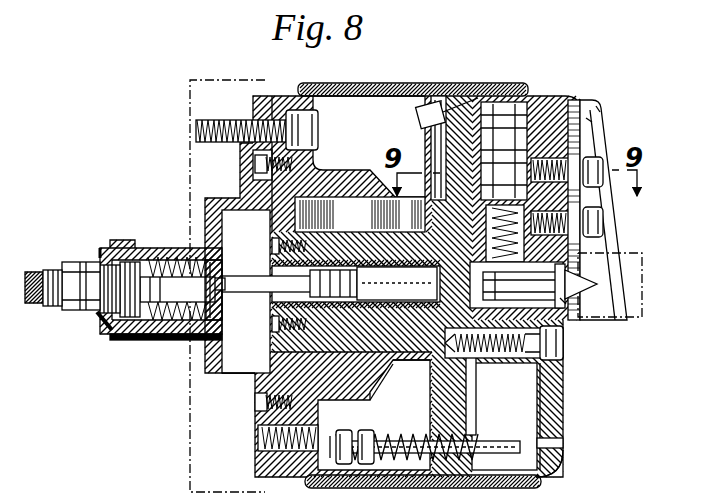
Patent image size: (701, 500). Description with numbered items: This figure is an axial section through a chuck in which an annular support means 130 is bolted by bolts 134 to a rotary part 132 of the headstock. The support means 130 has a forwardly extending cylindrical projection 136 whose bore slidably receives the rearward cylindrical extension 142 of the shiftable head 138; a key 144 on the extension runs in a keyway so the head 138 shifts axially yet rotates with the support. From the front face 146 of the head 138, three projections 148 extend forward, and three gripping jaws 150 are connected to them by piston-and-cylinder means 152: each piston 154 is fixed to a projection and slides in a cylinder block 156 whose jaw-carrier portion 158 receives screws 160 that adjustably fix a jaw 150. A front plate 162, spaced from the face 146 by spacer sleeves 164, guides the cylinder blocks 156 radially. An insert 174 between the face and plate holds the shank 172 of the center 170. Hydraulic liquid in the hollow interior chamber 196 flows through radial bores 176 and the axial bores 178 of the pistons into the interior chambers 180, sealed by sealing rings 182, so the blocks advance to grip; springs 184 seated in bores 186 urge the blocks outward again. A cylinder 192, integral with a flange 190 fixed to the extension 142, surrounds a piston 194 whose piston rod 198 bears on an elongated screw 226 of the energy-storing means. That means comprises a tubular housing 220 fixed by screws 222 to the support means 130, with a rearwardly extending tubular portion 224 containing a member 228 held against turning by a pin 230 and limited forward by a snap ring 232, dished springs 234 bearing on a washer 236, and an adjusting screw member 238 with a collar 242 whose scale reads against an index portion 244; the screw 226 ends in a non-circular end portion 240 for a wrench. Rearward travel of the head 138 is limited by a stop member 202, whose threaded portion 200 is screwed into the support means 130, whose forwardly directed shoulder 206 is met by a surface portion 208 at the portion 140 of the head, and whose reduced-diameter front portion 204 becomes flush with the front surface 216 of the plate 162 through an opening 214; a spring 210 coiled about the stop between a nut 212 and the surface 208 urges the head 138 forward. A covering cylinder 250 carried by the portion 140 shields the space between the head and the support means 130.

The annular support means 130 is at (252, 94).
The rotary part of the headstock 132 is at (190, 82).
The bolts 134 is at (193, 126).
The forwardly extending cylindrical projection 136 is at (330, 186).
The shiftable head 138 is at (478, 390).
The portion of the head 140 is at (430, 392).
The rearward cylindrical extension 142 is at (270, 354).
The key 144 is at (357, 213).
The front face of the head 146 is at (478, 374).
The forwardly extending projections 148 is at (507, 100).
The gripping jaws 150 is at (590, 118).
The piston-and-cylinder means 152 is at (541, 97).
The piston 154 is at (568, 150).
The cylinder blocks 156 is at (566, 226).
The jaw-carrier portion 158 is at (572, 118).
The screws 160 is at (576, 160).
The front plate 162 is at (563, 400).
The spacer sleeves 164 is at (565, 368).
The center 170 is at (598, 284).
The shank of the center 172 is at (566, 274).
The insert 174 is at (568, 296).
The radial bores 176 is at (437, 98).
The axial bores of the pistons 178 is at (598, 104).
The interior chambers of the cylinders 180 is at (603, 168).
The sealing rings 182 is at (419, 134).
The springs 184 is at (606, 242).
The bores in the blocks 186 is at (604, 214).
The flange 190 is at (272, 233).
The cylinder 192 is at (372, 396).
The piston 194 is at (290, 272).
The hollow interior chamber 196 is at (374, 415).
The piston rod 198 is at (258, 296).
The threaded portion 200 is at (258, 450).
The stop member 202 is at (410, 462).
The front portion of reduced diameter 204 is at (498, 448).
The forwardly directed shoulder 206 is at (474, 432).
The surface portion 208 is at (474, 440).
The spring 210 is at (403, 434).
The nut 212 is at (358, 464).
The opening 214 is at (563, 442).
The front surface of the plate 216 is at (565, 383).
The elongated tubular housing 220 is at (255, 196).
The screws 222 is at (258, 163).
The rearwardly extending tubular portion 224 is at (140, 340).
The elongated screw 226 is at (152, 256).
The member 228 is at (188, 325).
The pin 230 is at (170, 280).
The snap ring 232 is at (202, 326).
The dished springs 234 is at (165, 325).
The washer 236 is at (107, 335).
The adjusting screw member 238 is at (98, 318).
The non-circular end portion 240 is at (33, 272).
The collar 242 is at (80, 262).
The index portion 244 is at (118, 246).
The covering cylinder 250 is at (398, 84).